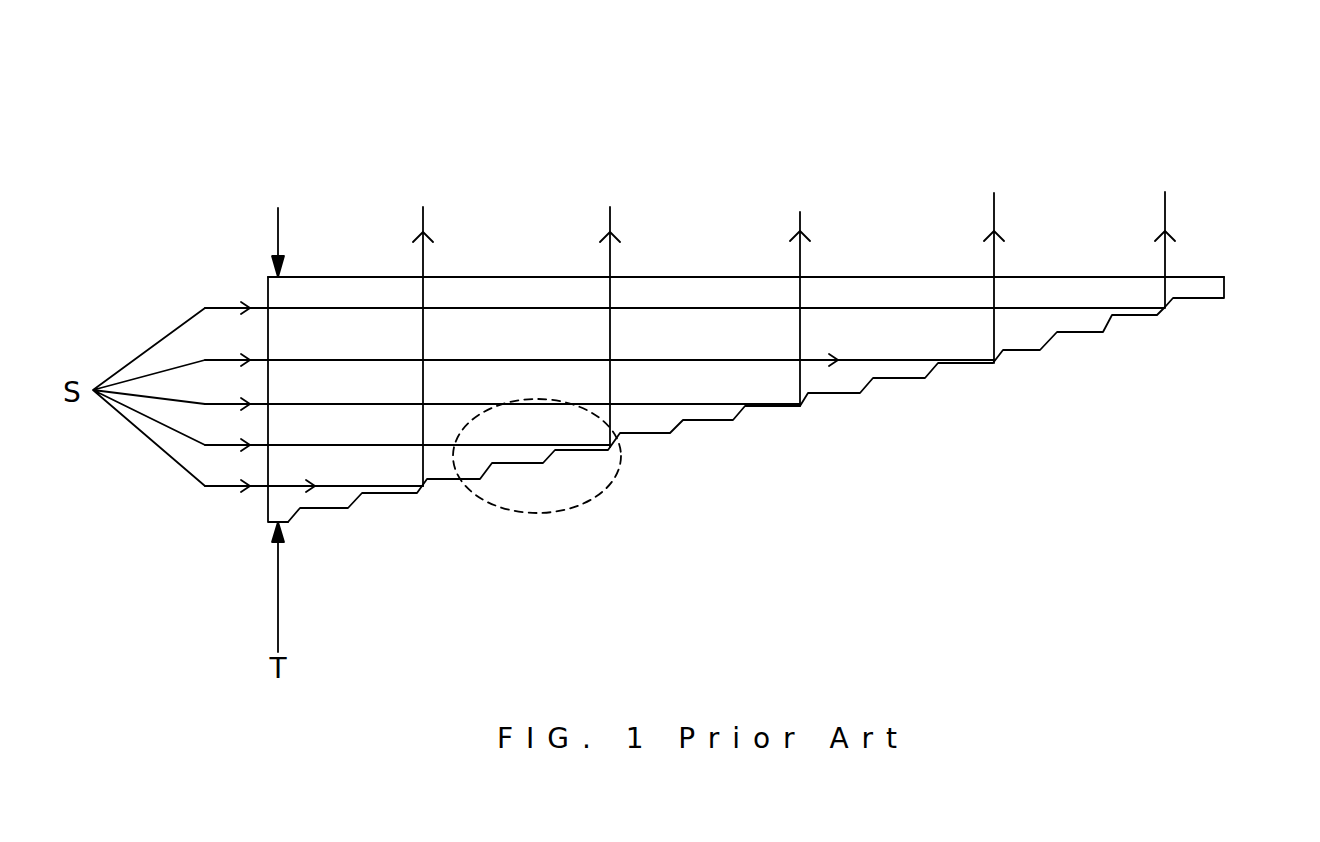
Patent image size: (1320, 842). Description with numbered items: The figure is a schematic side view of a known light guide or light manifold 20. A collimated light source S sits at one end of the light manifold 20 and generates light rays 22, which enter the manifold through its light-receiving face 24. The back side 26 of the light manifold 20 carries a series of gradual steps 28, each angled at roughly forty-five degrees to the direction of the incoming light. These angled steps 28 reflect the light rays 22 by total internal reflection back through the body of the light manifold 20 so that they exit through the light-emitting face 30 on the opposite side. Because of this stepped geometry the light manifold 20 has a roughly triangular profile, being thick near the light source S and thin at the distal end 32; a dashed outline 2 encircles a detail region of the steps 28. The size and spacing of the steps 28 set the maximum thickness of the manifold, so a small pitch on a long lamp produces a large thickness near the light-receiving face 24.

The light manifold 20 is at (350, 64).
The light rays 22 is at (223, 307).
The light-receiving face 24 is at (263, 513).
The back side 26 is at (708, 440).
The steps 28 is at (293, 522).
The light-emitting face 30 is at (485, 276).
The distal end 32 is at (1225, 288).
The detail region 2 is at (543, 513).